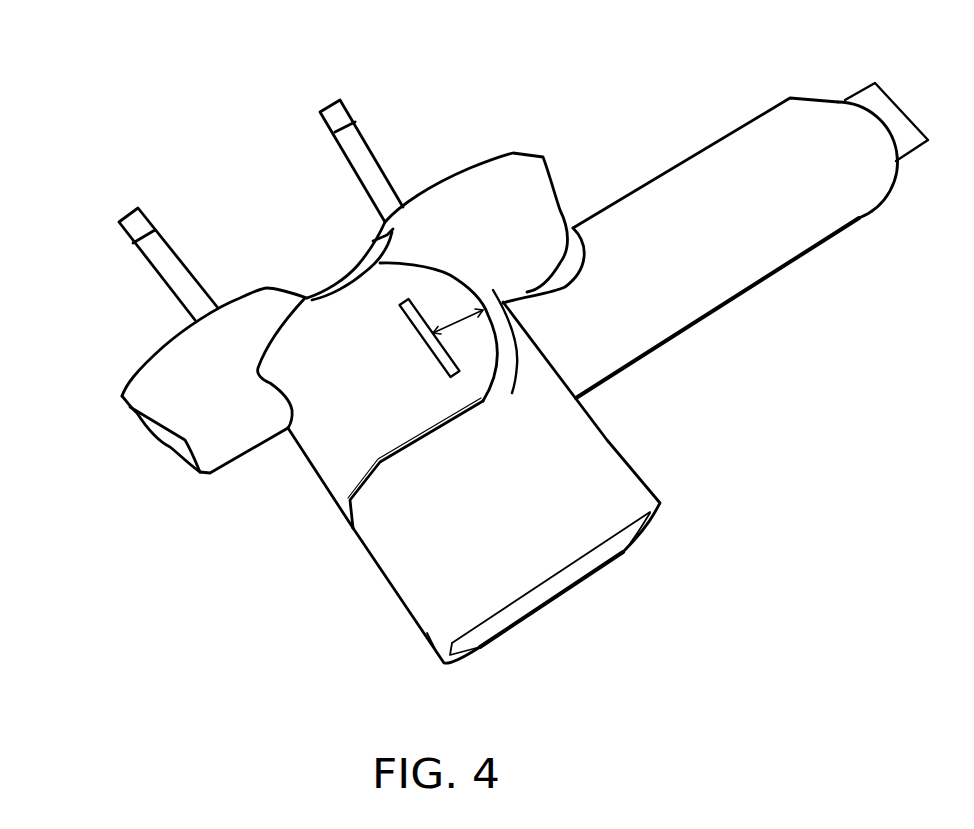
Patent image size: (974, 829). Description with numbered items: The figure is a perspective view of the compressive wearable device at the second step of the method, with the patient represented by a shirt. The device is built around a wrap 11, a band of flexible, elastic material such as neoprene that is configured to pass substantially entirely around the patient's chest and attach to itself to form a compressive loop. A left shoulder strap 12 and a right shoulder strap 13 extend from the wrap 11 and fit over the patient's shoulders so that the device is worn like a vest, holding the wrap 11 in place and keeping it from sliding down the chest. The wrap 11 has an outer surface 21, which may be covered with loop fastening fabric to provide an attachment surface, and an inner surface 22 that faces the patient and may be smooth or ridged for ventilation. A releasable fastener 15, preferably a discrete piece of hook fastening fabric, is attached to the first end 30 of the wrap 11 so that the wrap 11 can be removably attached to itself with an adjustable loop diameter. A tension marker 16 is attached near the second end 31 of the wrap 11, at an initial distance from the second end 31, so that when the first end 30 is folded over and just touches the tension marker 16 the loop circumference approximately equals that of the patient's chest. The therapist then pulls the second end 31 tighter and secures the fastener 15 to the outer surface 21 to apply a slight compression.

The wrap 11 is at (677, 335).
The left shoulder strap 12 is at (383, 168).
The right shoulder strap 13 is at (152, 265).
The releasable fastener 15 is at (903, 110).
The tension marker 16 is at (440, 348).
The outer surface 21 is at (358, 408).
The inner surface 22 is at (707, 267).
The first end 30 is at (882, 125).
The second end 31 is at (511, 360).